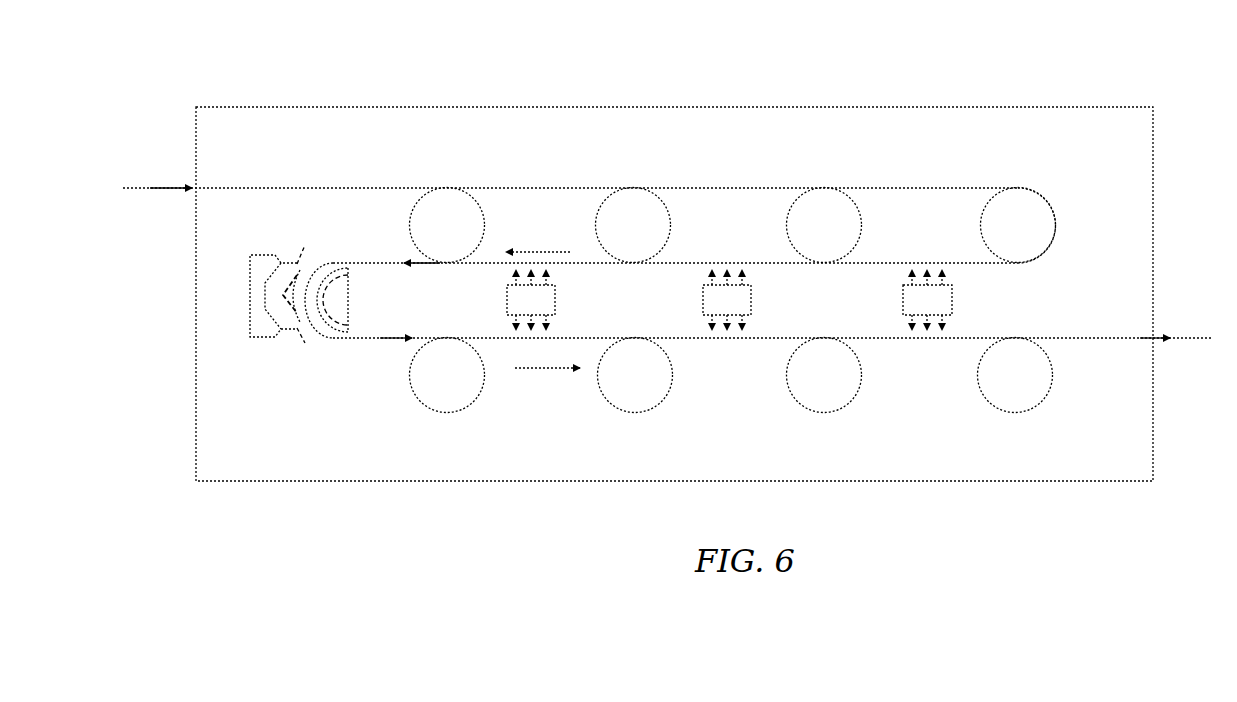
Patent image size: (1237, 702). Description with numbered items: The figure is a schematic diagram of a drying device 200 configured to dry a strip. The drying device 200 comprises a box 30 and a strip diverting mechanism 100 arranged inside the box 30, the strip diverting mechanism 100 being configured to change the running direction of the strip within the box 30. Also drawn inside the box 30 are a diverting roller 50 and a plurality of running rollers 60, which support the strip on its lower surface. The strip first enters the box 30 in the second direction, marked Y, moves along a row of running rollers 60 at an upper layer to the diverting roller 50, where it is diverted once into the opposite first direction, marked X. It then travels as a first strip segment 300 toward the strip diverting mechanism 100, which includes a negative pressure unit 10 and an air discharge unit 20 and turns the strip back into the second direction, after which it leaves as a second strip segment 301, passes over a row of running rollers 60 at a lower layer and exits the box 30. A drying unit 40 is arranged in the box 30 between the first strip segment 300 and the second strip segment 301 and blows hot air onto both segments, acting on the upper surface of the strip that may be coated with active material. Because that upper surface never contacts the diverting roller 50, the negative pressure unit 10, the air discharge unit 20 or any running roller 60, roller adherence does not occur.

The drying device 200 is at (708, 62).
The negative pressure unit 10 is at (272, 262).
The air discharge unit 20 is at (350, 311).
The box 30 is at (1155, 443).
The drying unit 40 is at (508, 303).
The diverting roller 50 is at (1030, 244).
The running rollers 60 is at (446, 193).
The strip diverting mechanism 100 is at (305, 353).
The first strip segment 300 is at (687, 262).
The second strip segment 301 is at (692, 341).